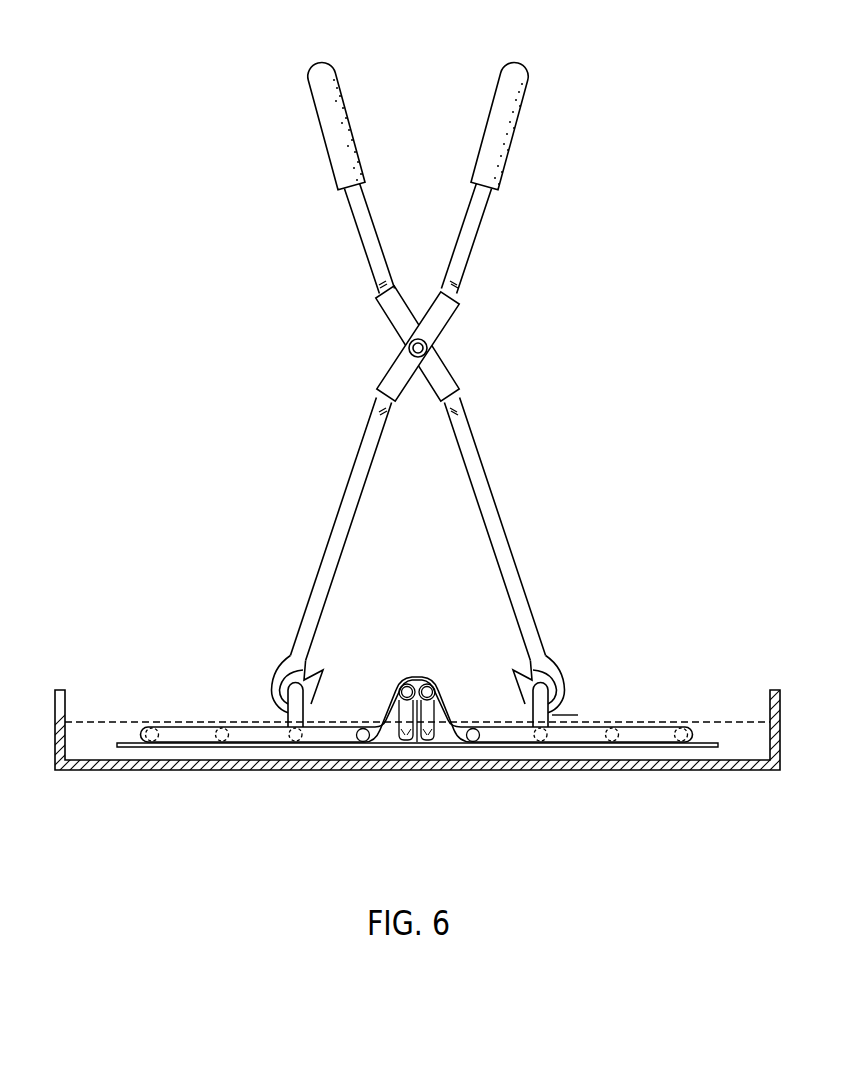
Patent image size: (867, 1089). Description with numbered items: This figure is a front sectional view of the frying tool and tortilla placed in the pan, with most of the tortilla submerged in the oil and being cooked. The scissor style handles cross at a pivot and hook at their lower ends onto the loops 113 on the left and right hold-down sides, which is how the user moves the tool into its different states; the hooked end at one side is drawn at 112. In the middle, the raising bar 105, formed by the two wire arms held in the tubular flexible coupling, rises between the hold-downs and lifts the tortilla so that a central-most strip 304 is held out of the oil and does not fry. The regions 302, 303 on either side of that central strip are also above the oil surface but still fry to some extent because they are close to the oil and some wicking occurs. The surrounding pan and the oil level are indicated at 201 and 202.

The raising bar 105 is at (418, 639).
The tong hook 112 is at (564, 676).
The loops 113 is at (578, 715).
The tray 201 is at (718, 772).
The liquid level 202 is at (727, 732).
The region on one side of the central-most strip 302 is at (458, 725).
The region on the other side of the central-most strip 303 is at (378, 724).
The central-most strip 304 is at (413, 676).